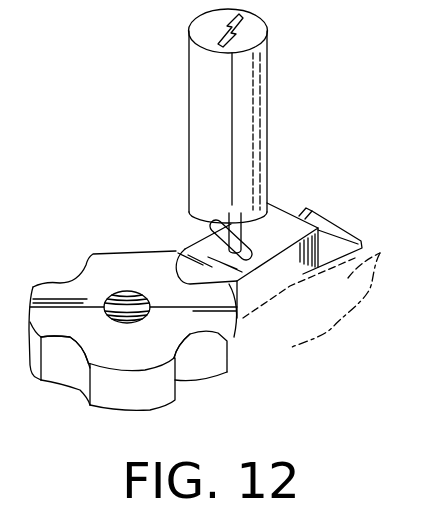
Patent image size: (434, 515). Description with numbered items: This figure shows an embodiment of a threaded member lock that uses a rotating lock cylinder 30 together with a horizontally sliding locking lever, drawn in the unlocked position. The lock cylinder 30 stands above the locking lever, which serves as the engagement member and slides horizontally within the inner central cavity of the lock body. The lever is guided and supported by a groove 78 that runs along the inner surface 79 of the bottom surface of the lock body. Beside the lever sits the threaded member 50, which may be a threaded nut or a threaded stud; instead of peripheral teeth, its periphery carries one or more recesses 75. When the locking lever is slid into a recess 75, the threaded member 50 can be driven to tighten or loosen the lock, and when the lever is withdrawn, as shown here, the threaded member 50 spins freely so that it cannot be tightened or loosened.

The lock cylinder 30 is at (259, 136).
The groove 78 is at (340, 233).
The inner surface 79 is at (380, 253).
The threaded member 50 is at (229, 349).
The recesses 75 is at (70, 370).